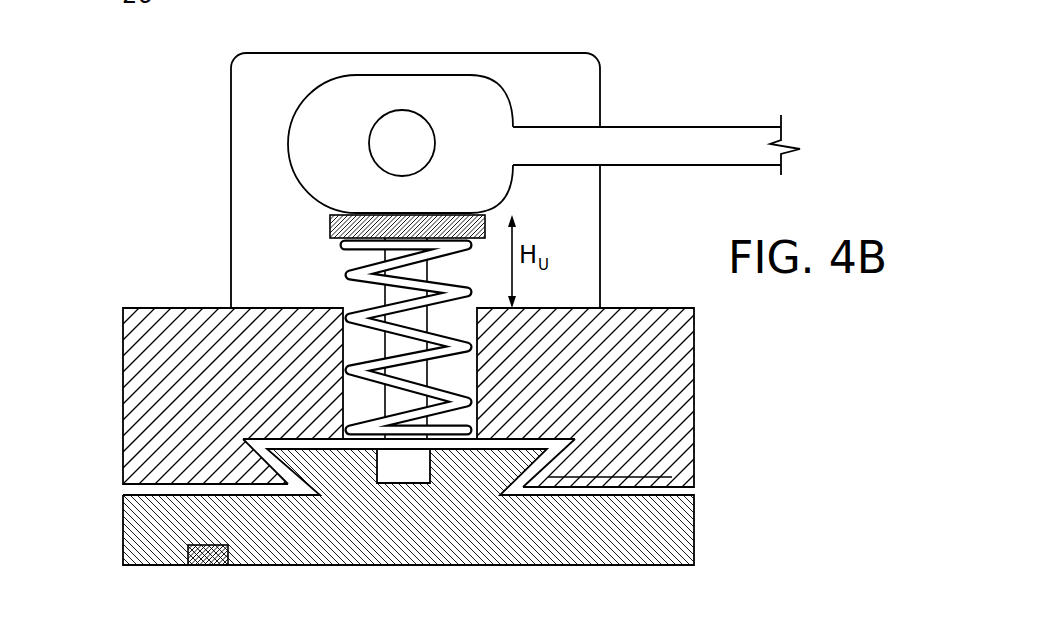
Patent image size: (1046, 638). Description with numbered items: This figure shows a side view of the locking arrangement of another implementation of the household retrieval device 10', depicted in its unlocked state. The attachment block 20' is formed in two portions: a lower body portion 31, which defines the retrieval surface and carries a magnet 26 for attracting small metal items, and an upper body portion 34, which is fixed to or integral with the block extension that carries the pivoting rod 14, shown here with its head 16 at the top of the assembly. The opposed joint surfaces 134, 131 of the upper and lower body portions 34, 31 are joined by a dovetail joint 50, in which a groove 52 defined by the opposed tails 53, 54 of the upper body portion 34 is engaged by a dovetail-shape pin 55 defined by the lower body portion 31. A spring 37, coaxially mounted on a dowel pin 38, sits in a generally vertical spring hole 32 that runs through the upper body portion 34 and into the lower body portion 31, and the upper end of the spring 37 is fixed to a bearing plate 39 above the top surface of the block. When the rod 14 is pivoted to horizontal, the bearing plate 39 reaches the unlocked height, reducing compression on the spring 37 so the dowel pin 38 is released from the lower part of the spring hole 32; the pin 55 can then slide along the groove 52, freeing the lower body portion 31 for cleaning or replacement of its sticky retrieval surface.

The household retrieval device 10' is at (544, 161).
The rod 14 is at (722, 127).
The head 16 is at (400, 76).
The attachment block 20' is at (844, 466).
The magnet 26 is at (190, 550).
The lower body portion 31 is at (133, 537).
The spring hole 32 is at (460, 370).
The upper body portion 34 is at (123, 378).
The spring 37 is at (348, 322).
The dowel pin 38 is at (393, 295).
The bearing plate 39 is at (330, 216).
The dovetail joint 50 is at (402, 476).
The groove 52 is at (567, 438).
The tail 53 is at (268, 473).
The tail 54 is at (668, 477).
The dovetail-shape pin 55 is at (338, 467).
The joint surface 131 is at (213, 486).
The joint surface 134 is at (649, 496).